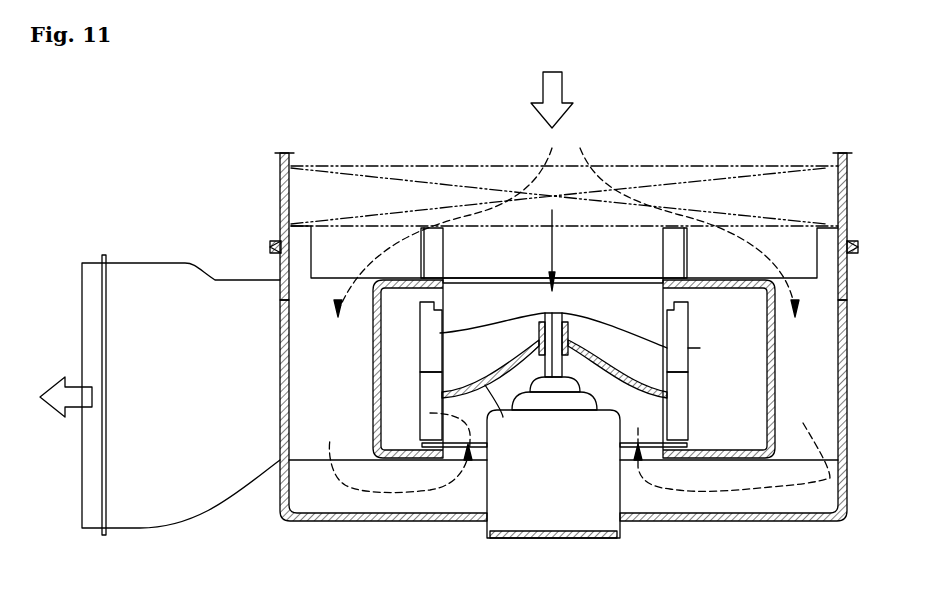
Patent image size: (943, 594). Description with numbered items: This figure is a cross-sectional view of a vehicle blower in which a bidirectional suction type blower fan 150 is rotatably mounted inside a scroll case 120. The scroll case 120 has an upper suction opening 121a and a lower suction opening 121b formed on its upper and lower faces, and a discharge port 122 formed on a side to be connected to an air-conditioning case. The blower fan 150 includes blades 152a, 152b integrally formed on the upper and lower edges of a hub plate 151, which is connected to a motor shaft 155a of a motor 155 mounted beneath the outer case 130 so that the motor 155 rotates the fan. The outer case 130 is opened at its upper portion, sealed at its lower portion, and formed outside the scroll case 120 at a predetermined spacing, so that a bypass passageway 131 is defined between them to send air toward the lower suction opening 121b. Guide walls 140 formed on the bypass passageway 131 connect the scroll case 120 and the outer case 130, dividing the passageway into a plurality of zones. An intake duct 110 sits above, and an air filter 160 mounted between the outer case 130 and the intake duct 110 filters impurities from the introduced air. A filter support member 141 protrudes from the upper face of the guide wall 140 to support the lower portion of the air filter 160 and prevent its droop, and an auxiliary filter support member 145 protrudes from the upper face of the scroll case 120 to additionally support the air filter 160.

The intake duct 110 is at (847, 178).
The scroll case 120 is at (697, 390).
The upper suction opening 121a is at (628, 291).
The lower suction opening 121b is at (652, 456).
The discharge port 122 is at (80, 292).
The outer case 130 is at (847, 490).
The bypass passageway 131 is at (322, 383).
The guide wall 140 is at (328, 278).
The filter support member 141 is at (317, 240).
The auxiliary filter support member 145 is at (700, 348).
The bidirectional suction type blower fan 150 is at (707, 420).
The hub plate 151 is at (503, 417).
The blades 152a is at (440, 333).
The blades 152b is at (440, 413).
The motor 155 is at (545, 505).
The motor shaft 155a is at (552, 370).
The air filter 160 is at (464, 166).